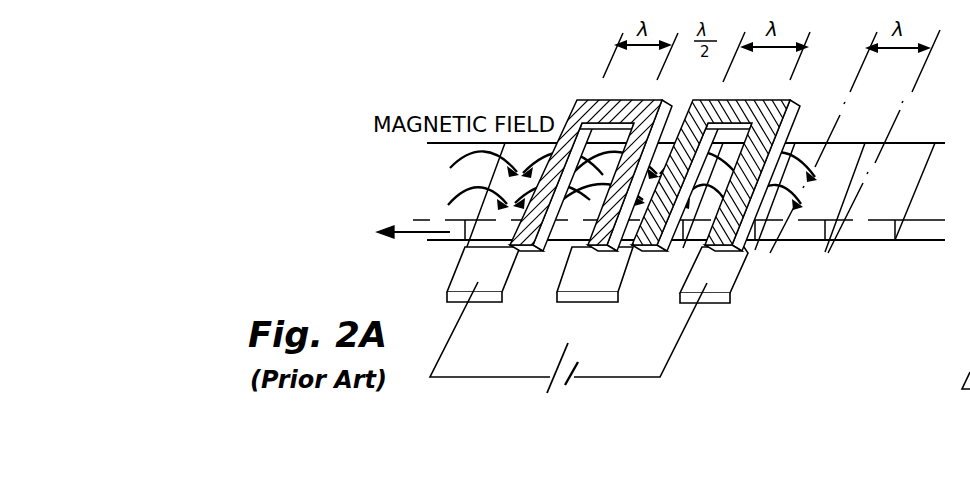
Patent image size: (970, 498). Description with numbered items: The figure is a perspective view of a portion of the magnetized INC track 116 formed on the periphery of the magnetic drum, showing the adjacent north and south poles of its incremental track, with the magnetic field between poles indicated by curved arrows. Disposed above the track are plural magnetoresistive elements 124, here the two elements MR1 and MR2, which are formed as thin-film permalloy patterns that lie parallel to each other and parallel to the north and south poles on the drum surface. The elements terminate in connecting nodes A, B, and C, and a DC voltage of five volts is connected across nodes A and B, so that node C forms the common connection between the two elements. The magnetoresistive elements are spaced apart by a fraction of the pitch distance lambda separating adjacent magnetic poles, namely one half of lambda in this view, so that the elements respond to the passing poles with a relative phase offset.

The magnetized INC track 116 is at (909, 153).
The magnetoresistive elements 124 is at (744, 284).
The first magnetoresistive element MR1 is at (586, 168).
The second magnetoresistive element MR2 is at (715, 166).
The connecting node A is at (483, 274).
The connecting node B is at (714, 275).
The connecting node C is at (595, 274).